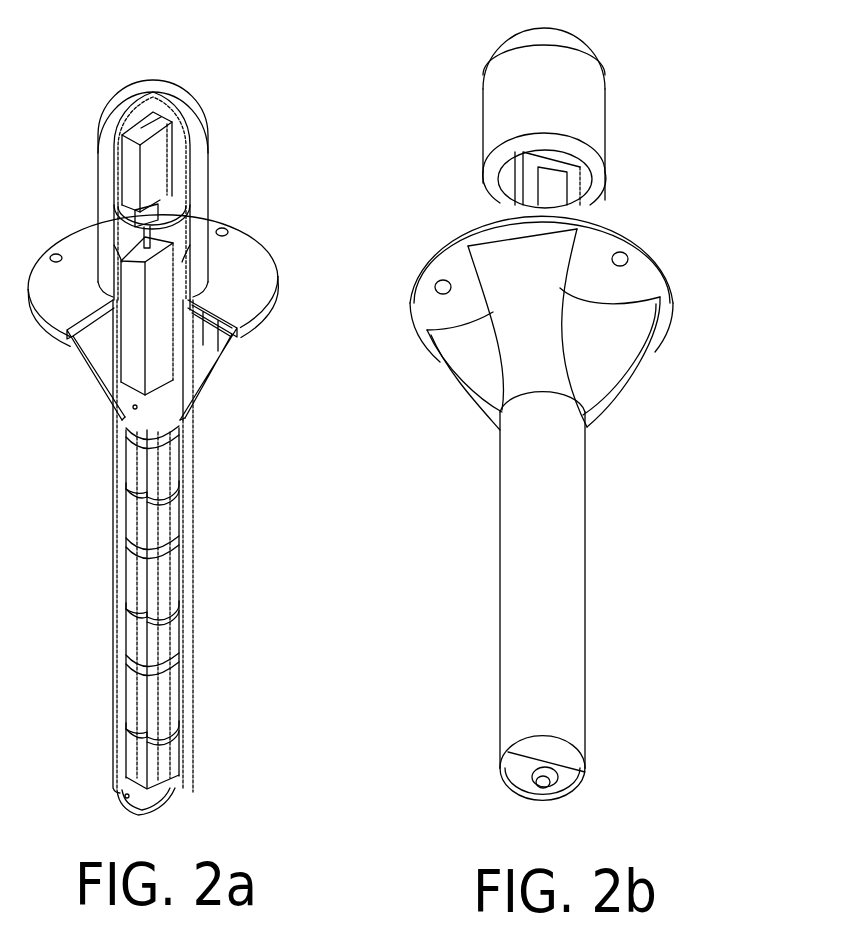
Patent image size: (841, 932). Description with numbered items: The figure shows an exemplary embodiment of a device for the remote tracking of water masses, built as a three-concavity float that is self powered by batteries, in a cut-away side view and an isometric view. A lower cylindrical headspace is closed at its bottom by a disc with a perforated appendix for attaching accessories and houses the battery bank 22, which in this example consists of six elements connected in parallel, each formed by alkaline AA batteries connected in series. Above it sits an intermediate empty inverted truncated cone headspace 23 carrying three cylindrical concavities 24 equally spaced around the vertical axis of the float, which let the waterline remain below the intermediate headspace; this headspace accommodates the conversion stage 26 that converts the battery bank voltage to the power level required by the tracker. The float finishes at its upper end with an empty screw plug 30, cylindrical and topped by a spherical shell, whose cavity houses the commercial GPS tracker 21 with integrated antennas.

In FIG. 2a, the GPS tracker 21 is at (160, 147).
In FIG. 2a, the battery bank 22 is at (182, 640).
In FIG. 2a, the inverted truncated cone headspace 23 is at (212, 347).
In FIG. 2b, the inverted truncated cone headspace 23 is at (522, 343).
In FIG. 2b, the cylindrical concavities 24 is at (600, 273).
In FIG. 2a, the conversion stage 26 is at (233, 332).
In FIG. 2b, the screw plug 30 is at (575, 95).